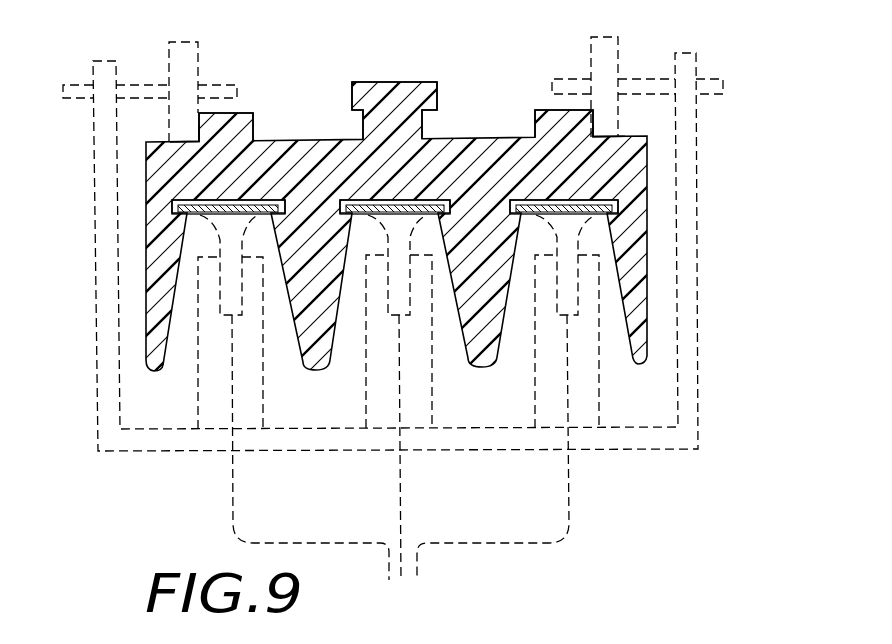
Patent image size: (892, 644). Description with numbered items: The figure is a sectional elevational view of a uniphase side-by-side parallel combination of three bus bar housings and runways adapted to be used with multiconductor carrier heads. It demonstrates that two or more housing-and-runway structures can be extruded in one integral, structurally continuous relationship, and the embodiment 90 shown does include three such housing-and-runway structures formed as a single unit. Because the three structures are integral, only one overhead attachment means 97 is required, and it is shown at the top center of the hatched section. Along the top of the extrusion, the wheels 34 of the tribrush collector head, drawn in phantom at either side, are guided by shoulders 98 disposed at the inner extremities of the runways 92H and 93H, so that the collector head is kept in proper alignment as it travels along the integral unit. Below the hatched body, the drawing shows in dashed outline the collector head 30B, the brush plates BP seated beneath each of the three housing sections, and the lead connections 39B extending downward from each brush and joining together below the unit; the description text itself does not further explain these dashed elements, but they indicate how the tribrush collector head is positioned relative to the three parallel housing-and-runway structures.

The embodiment 90 is at (415, 43).
The overhead attachment means 97 is at (421, 82).
The shoulders 98 is at (240, 113).
The runway 92H is at (183, 141).
The runway 93H is at (610, 136).
The wheels 34 is at (187, 42).
The housing 30B is at (98, 341).
The backing plate BP is at (395, 257).
The passage 39B is at (233, 495).